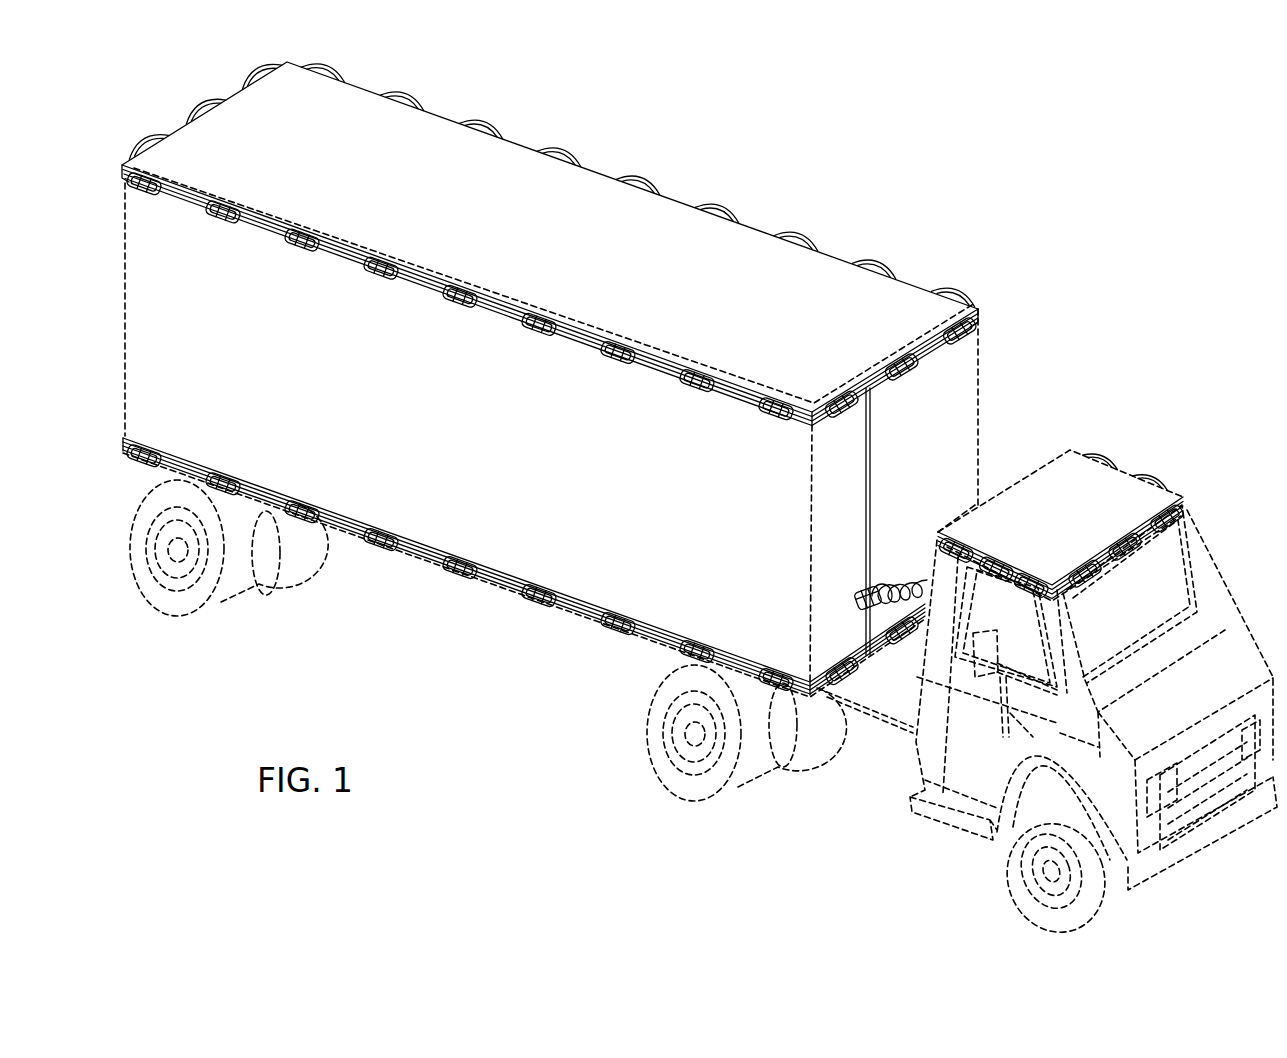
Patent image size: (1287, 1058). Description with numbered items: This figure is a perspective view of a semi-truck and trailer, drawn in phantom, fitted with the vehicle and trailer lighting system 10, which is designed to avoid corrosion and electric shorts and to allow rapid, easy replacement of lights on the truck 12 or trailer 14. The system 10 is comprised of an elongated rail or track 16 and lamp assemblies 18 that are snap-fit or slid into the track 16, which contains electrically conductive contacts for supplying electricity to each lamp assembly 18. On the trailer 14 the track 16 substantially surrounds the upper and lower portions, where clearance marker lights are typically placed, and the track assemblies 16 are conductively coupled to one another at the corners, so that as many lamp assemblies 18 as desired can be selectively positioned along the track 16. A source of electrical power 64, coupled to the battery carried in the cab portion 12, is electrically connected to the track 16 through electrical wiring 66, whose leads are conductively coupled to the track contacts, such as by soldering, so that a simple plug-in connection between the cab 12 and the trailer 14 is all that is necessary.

The vehicle and trailer lighting system 10 is at (614, 120).
The truck 12 is at (1162, 428).
The trailer 14 is at (805, 230).
The track 16 is at (663, 377).
The lamp assembly 18 is at (618, 362).
The source of electrical power 64 is at (865, 590).
The electrical wiring 66 is at (870, 470).